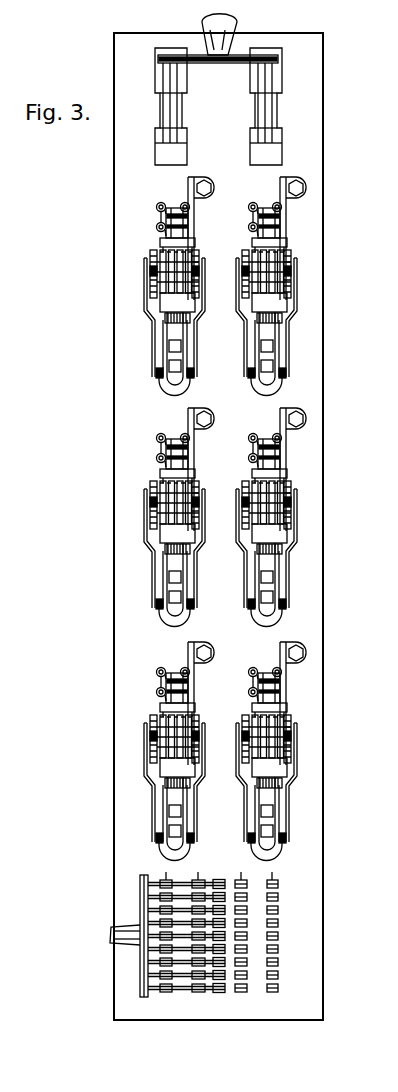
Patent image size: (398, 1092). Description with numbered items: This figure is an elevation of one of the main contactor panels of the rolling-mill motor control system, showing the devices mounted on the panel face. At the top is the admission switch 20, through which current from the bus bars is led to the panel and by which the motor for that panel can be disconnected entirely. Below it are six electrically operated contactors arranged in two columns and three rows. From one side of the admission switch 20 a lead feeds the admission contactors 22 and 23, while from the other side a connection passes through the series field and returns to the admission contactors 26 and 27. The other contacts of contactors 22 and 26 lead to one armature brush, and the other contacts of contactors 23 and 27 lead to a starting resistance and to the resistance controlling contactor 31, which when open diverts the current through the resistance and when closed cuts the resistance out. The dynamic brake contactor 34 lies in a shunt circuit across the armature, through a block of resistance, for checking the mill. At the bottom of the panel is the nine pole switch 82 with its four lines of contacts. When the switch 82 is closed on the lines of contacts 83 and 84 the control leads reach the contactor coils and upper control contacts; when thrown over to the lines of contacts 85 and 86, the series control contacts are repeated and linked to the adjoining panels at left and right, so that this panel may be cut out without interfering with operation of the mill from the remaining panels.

The admission switch 20 is at (161, 112).
The admission contactor 22 is at (158, 336).
The admission contactor 26 is at (248, 338).
The admission contactor 23 is at (158, 584).
The admission contactor 27 is at (248, 585).
The dynamic brake contactor 34 is at (158, 796).
The resistance controlling contactor 31 is at (248, 797).
The nine pole switch 82 is at (140, 910).
The line of contacts 83 is at (198, 996).
The line of contacts 84 is at (166, 996).
The line of contacts 85 is at (241, 996).
The line of contacts 86 is at (272, 996).